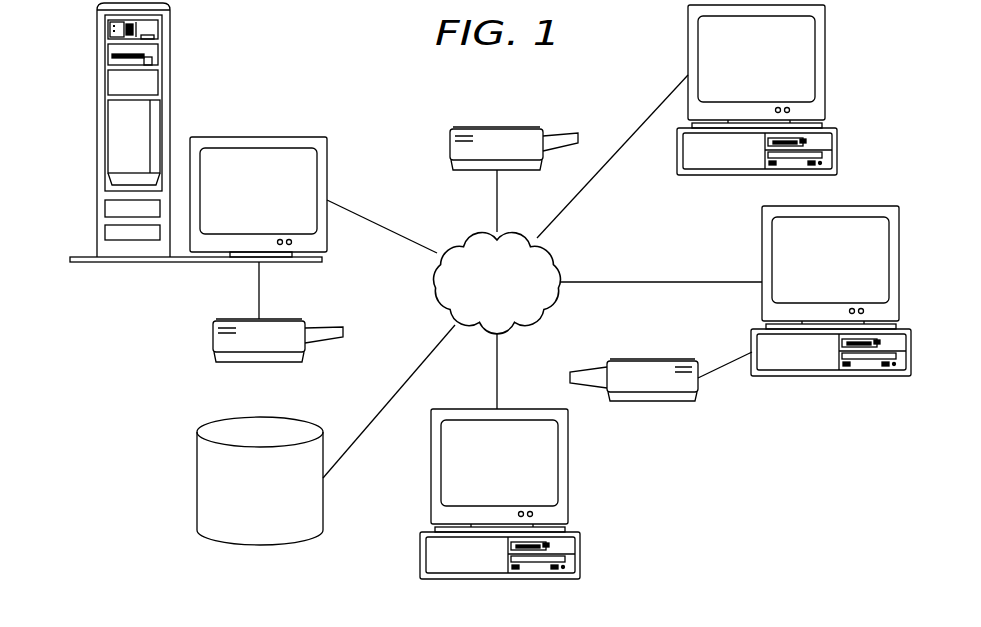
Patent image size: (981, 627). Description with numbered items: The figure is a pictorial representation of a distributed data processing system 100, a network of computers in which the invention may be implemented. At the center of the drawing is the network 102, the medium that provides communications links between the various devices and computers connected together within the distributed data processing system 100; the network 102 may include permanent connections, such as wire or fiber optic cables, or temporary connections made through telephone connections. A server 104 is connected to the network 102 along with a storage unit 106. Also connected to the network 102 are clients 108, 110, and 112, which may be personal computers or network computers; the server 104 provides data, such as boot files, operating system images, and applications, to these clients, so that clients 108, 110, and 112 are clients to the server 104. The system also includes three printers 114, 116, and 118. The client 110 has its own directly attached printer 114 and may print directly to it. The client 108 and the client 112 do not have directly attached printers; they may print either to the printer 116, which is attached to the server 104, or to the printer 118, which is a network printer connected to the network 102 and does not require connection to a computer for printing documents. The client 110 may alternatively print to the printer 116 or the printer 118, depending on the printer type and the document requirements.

The distributed data processing system 100 is at (331, 79).
The network 102 is at (520, 294).
The server 104 is at (282, 201).
The storage unit 106 is at (281, 498).
The client 108 is at (778, 71).
The client 110 is at (831, 291).
The client 112 is at (500, 494).
The printer 114 is at (655, 360).
The printer 116 is at (213, 343).
The printer 118 is at (450, 142).